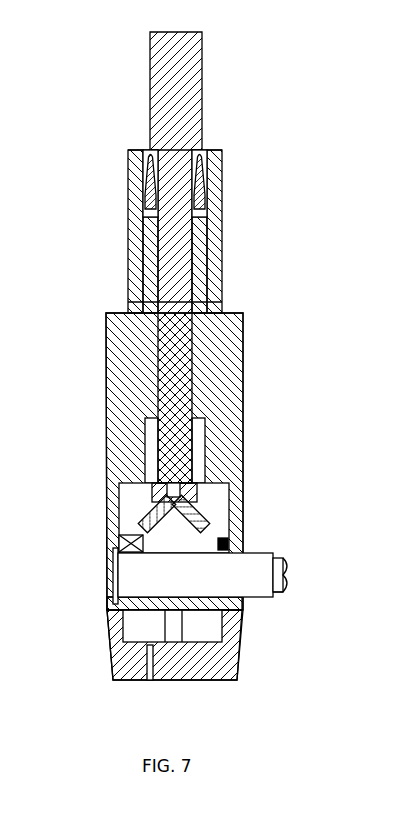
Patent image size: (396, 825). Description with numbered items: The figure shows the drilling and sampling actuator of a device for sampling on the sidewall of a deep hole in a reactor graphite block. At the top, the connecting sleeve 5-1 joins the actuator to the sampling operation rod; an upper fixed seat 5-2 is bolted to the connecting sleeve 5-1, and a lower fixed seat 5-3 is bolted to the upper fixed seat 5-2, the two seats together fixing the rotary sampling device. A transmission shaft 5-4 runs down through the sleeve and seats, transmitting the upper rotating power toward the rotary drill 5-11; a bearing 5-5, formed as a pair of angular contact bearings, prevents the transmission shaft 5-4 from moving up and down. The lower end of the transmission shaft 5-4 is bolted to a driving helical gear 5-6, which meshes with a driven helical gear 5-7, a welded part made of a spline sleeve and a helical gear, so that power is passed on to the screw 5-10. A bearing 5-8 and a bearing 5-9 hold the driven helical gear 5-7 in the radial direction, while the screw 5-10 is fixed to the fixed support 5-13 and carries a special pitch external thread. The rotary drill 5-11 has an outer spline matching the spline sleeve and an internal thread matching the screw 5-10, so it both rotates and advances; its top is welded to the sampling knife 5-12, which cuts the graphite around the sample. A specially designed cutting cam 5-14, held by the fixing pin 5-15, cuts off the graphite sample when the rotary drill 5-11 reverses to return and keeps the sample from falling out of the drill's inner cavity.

The connecting sleeve 5-1 is at (130, 208).
The upper fixed seat 5-2 is at (118, 540).
The lower fixed seat 5-3 is at (108, 632).
The transmission shaft 5-4 is at (155, 103).
The bearing 5-5 is at (150, 153).
The driving helical gear 5-6 is at (217, 483).
The driven helical gear 5-7 is at (215, 520).
The bearing 5-8 is at (118, 495).
The bearing 5-9 is at (225, 540).
The screw 5-10 is at (115, 560).
The rotary drill 5-11 is at (222, 572).
The sampling knife 5-12 is at (285, 560).
The fixed support 5-13 is at (112, 600).
The cutting cam 5-14 is at (280, 600).
The fixing pin 5-15 is at (283, 590).